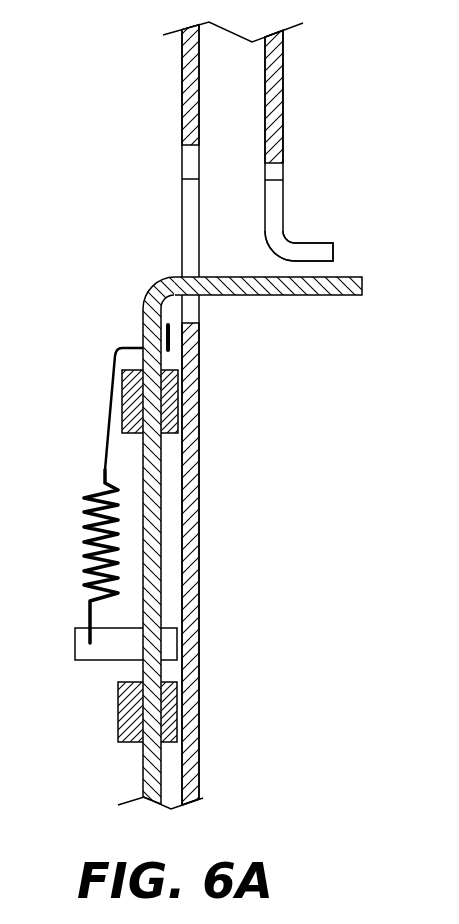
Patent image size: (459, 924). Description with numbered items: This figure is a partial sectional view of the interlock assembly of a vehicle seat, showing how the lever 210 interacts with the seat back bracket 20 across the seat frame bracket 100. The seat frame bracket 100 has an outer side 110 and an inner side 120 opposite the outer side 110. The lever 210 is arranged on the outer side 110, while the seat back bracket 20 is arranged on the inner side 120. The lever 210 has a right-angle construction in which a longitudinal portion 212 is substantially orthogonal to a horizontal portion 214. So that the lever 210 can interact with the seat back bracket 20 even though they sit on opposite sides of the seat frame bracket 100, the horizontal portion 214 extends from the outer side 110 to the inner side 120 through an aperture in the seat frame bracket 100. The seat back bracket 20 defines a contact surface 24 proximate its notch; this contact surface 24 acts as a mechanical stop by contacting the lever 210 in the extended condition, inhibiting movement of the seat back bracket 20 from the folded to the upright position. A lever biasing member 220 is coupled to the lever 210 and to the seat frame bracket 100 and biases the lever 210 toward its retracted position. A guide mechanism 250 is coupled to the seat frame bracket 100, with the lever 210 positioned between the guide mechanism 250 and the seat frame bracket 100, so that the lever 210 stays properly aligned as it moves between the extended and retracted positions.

The seat back bracket 20 is at (283, 90).
The contact surface 24 is at (289, 246).
The seat frame bracket 100 is at (193, 415).
The outer side 110 is at (138, 142).
The inner side 120 is at (277, 675).
The lever 210 is at (230, 523).
The longitudinal portion 212 is at (160, 513).
The horizontal portion 214 is at (320, 295).
The lever biasing member 220 is at (83, 532).
The guide mechanism 250 is at (170, 410).